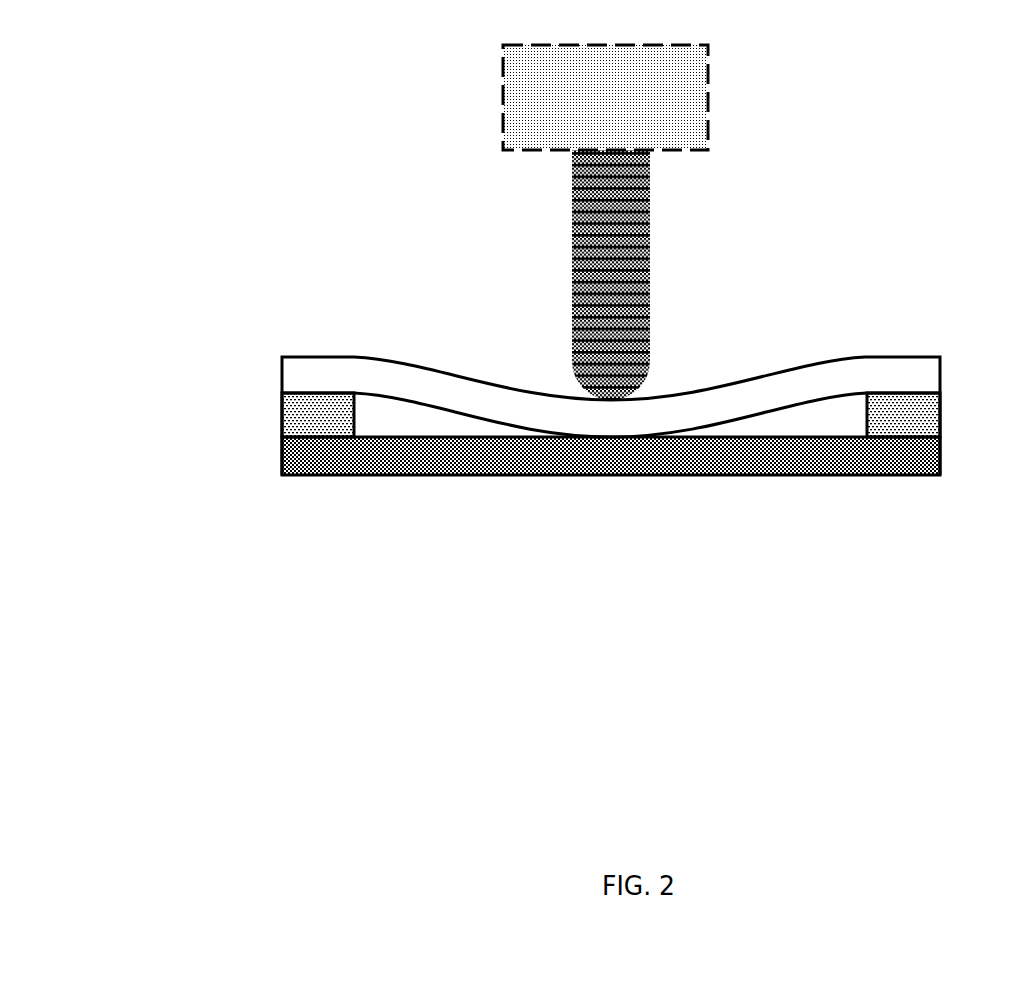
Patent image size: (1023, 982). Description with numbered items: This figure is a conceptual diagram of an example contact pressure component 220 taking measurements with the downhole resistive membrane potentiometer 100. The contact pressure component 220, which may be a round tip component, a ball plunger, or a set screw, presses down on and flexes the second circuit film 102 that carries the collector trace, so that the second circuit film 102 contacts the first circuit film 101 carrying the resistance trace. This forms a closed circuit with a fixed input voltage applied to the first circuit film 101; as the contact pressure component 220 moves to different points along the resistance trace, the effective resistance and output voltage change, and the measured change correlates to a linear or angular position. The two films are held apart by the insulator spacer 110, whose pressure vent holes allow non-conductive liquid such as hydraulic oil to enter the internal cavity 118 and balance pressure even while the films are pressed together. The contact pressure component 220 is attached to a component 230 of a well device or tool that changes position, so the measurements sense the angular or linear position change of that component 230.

The downhole resistive membrane potentiometer 100 is at (137, 42).
The first circuit film 101 is at (301, 459).
The second circuit film 102 is at (913, 372).
The insulator spacer 110 is at (900, 422).
The internal cavity 118 is at (829, 418).
The contact pressure component 220 is at (583, 205).
The component of a well device or well tool 230 is at (510, 90).